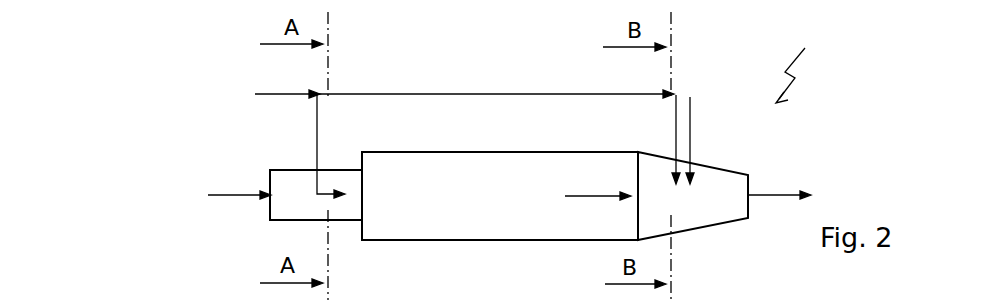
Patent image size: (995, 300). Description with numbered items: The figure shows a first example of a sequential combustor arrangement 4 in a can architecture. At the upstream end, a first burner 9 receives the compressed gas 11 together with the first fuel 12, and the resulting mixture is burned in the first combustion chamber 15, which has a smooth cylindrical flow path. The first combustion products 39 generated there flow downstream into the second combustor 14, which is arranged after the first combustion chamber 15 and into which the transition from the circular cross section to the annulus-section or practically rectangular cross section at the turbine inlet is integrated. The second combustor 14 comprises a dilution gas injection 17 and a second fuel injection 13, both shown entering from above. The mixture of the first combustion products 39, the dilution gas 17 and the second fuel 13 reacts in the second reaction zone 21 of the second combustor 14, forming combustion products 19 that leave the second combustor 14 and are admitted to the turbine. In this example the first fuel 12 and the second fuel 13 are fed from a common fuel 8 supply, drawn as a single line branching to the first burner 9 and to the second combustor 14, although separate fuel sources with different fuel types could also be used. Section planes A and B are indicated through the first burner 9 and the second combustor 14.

The sequential combustor arrangement 4 is at (799, 75).
The common fuel supply 8 is at (464, 83).
The first burner 9 is at (316, 195).
The compressed gas 11 is at (239, 185).
The first fuel 12 is at (331, 146).
The second fuel injection 13 is at (664, 139).
The second combustor 14 is at (693, 196).
The first combustion chamber 15 is at (500, 196).
The dilution gas injection 17 is at (701, 140).
The combustion products 19 is at (779, 186).
The second reaction zone 21 is at (702, 196).
The first combustion products 39 is at (598, 187).